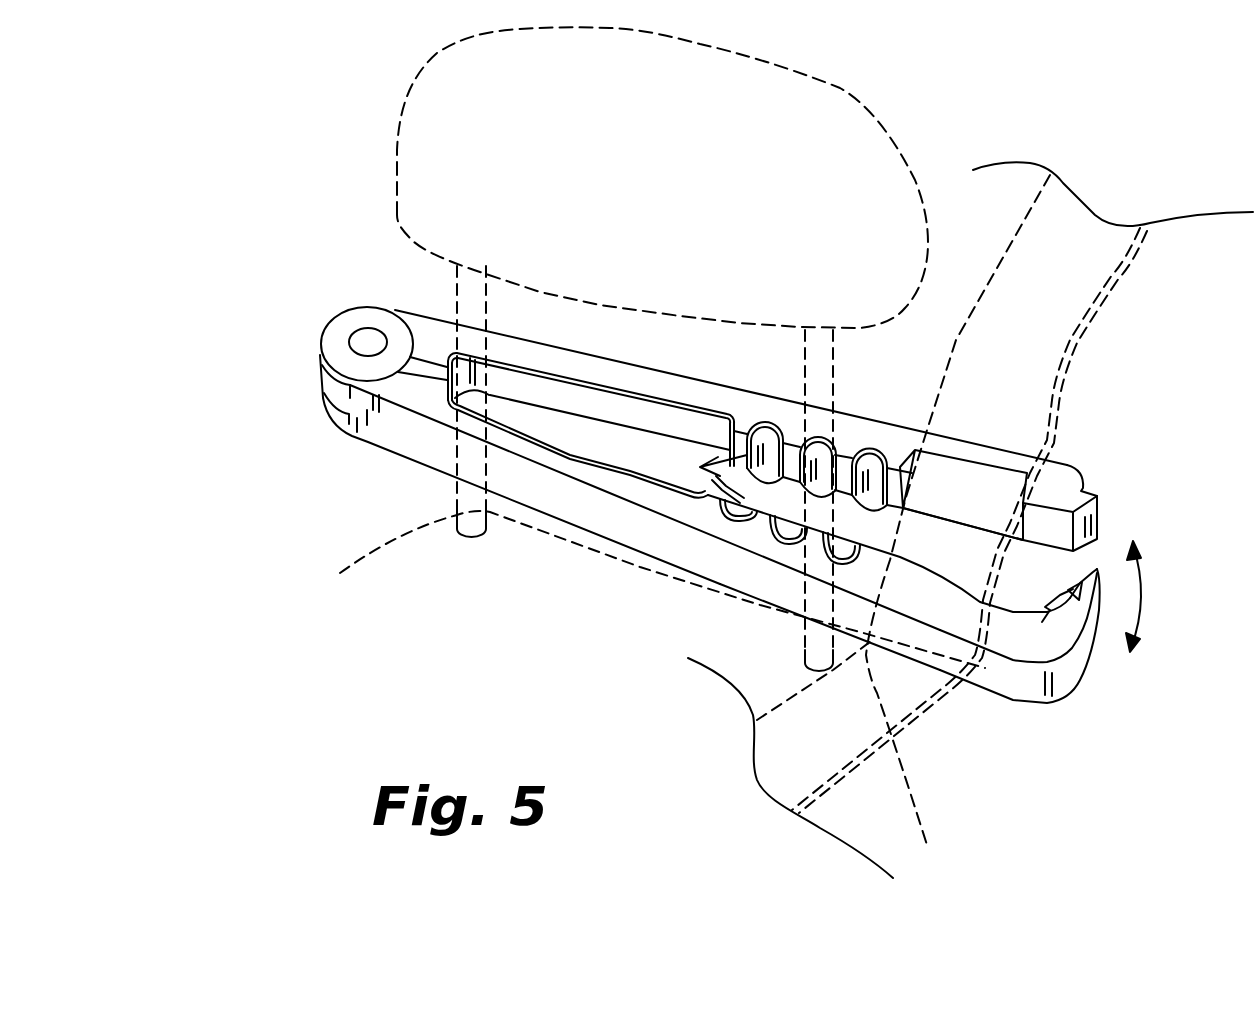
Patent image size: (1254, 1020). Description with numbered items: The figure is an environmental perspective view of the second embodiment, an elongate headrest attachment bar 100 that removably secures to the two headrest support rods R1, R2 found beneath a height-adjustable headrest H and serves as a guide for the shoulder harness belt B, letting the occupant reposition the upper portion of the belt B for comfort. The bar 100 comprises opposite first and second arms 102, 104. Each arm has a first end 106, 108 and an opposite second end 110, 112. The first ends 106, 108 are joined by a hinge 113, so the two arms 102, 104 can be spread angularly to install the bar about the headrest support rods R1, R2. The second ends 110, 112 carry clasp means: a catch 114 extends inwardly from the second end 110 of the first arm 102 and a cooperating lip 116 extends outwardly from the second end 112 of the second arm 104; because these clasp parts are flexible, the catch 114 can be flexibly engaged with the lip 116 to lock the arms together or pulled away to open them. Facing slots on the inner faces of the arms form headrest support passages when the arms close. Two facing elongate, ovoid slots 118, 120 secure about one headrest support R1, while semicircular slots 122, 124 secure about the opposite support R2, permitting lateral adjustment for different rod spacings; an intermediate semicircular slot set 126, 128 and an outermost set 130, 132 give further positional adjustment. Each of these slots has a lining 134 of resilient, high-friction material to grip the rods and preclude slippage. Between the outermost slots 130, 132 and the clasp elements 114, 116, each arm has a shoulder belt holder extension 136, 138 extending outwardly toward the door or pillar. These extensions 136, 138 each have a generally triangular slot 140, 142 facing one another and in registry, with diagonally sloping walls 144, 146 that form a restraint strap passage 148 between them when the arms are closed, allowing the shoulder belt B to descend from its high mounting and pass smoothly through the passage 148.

The headrest attachment bar 100 is at (563, 537).
The first arm 102 is at (635, 543).
The second arm 104 is at (660, 370).
The first end of first arm 106 is at (370, 442).
The first end of second arm 108 is at (455, 324).
The second end of first arm 110 is at (1036, 706).
The second end of second arm 112 is at (1068, 466).
The hinge 113 is at (352, 342).
The catch 114 is at (1078, 600).
The lip 116 is at (1100, 513).
The headrest support slot 118 is at (562, 442).
The headrest support slot 120 is at (571, 384).
The semicircular slot 122 is at (726, 511).
The semicircular slot 124 is at (773, 430).
The intermediate semicircular slot 126 is at (788, 537).
The intermediate semicircular slot 128 is at (823, 447).
The outermost semicircular slot 130 is at (845, 560).
The outermost semicircular slot 132 is at (877, 460).
The lining 134 is at (632, 412).
The shoulder belt holder extension 136 is at (907, 663).
The shoulder belt holder extension 138 is at (948, 442).
The triangular slot 140 is at (968, 590).
The triangular slot 142 is at (963, 470).
The diagonally sloping wall 144 is at (961, 511).
The diagonally sloping wall 146 is at (897, 572).
The restraint strap passage 148 is at (980, 507).
The headrest H is at (397, 128).
The headrest support rod R1 is at (452, 294).
The headrest support rod R2 is at (838, 372).
The shoulder harness belt B is at (1073, 341).